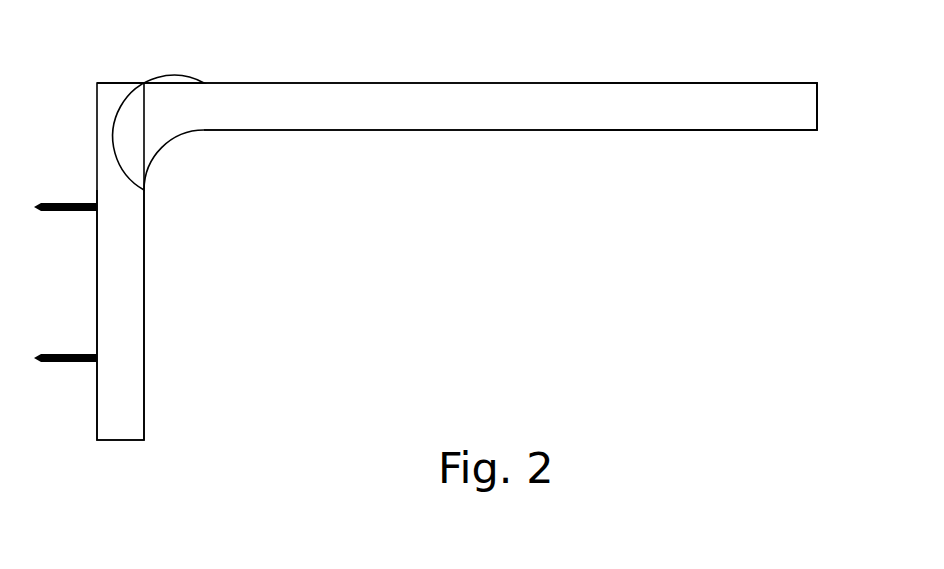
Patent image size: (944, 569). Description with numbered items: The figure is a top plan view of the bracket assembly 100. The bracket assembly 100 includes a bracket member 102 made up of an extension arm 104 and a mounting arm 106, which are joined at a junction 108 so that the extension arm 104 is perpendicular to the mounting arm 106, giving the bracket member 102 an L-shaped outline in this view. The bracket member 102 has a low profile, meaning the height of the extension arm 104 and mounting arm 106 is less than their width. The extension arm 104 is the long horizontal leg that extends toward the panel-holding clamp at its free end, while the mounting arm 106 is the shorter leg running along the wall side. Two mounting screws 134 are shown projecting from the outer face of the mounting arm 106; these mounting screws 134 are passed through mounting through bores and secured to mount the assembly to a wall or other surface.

The bracket assembly 100 is at (102, 56).
The bracket member 102 is at (399, 85).
The extension arm 104 is at (611, 96).
The mounting arm 106 is at (137, 312).
The junction 108 is at (152, 105).
The mounting screws 134 is at (57, 214).